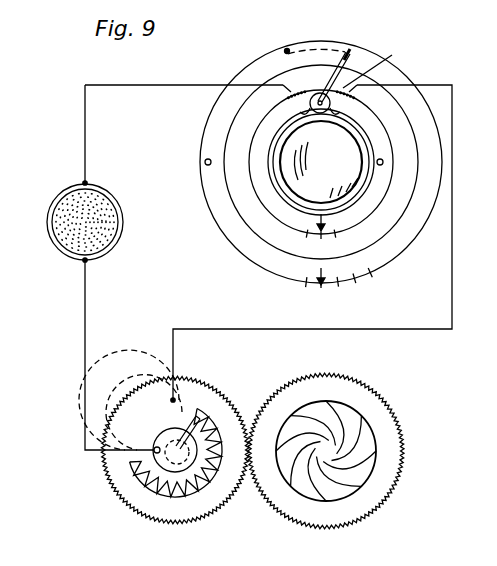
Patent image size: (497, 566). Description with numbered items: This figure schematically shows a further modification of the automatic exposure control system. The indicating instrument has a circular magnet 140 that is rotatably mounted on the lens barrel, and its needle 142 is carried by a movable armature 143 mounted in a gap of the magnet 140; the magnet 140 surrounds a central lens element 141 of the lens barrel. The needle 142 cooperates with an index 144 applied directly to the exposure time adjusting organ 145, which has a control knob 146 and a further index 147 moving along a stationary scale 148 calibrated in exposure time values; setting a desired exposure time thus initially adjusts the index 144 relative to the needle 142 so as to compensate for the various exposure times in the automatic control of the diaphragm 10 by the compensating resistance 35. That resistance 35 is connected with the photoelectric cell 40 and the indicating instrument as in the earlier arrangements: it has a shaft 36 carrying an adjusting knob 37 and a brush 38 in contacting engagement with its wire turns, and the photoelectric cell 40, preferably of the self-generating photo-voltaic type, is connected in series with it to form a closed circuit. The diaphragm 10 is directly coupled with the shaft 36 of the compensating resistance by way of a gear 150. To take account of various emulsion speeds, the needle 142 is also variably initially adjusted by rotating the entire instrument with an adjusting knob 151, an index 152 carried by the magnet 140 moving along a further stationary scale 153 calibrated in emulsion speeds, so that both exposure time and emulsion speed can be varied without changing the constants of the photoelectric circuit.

The diaphragm 10 is at (366, 396).
The compensating resistance 35 is at (192, 506).
The shaft 36 is at (173, 460).
The adjusting knob 37 is at (137, 463).
The brush 38 is at (199, 419).
The photoelectric cell 40 is at (106, 224).
The magnet 140 is at (395, 238).
The lens 141 is at (292, 192).
The needle 142 is at (350, 50).
The movable armature 143 is at (379, 63).
The index 144 is at (288, 49).
The exposure time adjusting organ 145 is at (228, 100).
The control knob 146 is at (205, 162).
The further index 147 is at (328, 279).
The stationary scale 148 is at (339, 291).
The gear 150 is at (148, 367).
The adjusting knob 151 is at (383, 162).
The index 152 is at (318, 218).
The further stationary scale 153 is at (318, 243).